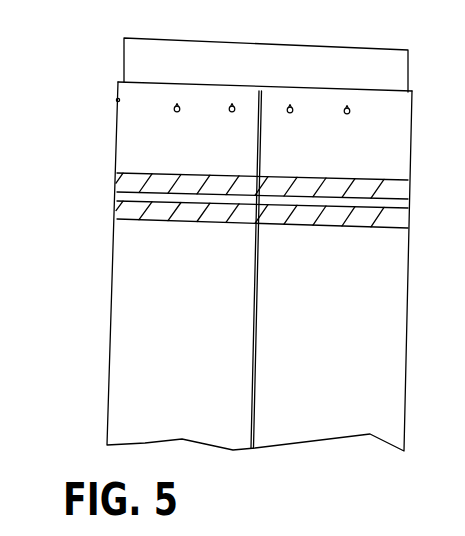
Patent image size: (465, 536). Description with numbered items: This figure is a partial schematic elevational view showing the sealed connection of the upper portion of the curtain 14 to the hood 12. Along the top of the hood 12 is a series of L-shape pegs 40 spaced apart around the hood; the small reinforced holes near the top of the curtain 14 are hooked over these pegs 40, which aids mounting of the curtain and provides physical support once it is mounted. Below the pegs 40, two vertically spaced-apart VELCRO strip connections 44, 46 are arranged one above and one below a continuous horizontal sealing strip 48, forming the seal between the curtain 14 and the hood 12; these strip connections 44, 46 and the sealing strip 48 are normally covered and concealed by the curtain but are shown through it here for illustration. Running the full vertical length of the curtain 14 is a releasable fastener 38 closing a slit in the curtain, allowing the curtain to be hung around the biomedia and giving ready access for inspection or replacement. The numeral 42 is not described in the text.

The hood 12 is at (125, 62).
The curtain 14 is at (112, 308).
The releasable fastener 38 is at (255, 328).
The L-shape pegs 40 is at (117, 100).
The hole 42 is at (464, 52).
The VELCRO strip connection 44 is at (115, 215).
The VELCRO strip connection 46 is at (117, 183).
The continuous horizontal sealing strip 48 is at (408, 208).